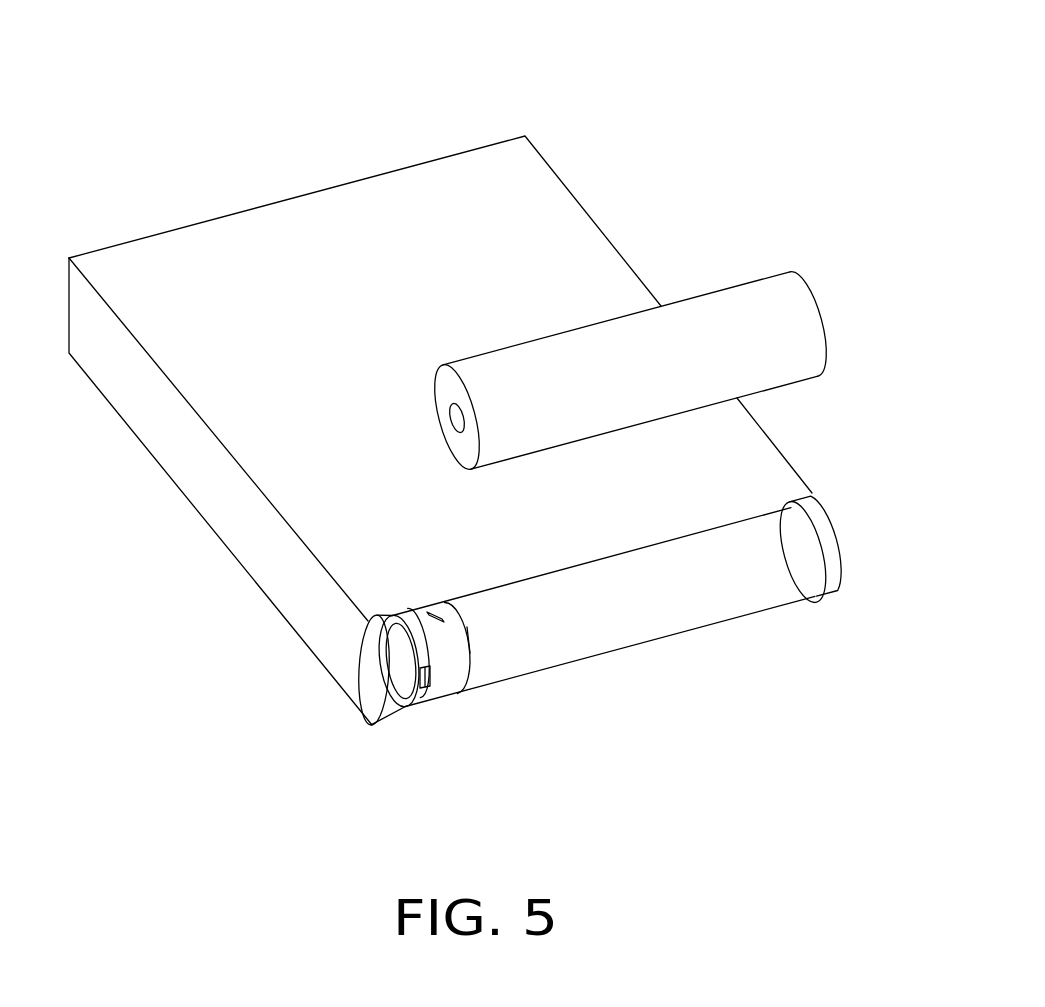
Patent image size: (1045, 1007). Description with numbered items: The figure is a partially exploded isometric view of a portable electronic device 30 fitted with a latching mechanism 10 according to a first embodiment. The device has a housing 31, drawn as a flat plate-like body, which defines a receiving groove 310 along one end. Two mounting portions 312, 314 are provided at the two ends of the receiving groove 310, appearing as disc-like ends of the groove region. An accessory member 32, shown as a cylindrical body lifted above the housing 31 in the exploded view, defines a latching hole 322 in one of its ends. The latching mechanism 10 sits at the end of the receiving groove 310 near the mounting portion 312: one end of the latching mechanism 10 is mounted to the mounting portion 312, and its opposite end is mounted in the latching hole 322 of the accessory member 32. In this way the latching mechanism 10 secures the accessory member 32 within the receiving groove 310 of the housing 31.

The portable electronic device 30 is at (485, 43).
The housing 31 is at (538, 243).
The accessory member 32 is at (563, 326).
The latching hole 322 is at (451, 421).
The receiving groove 310 is at (645, 641).
The mounting portion 312 is at (395, 698).
The mounting portion 314 is at (823, 528).
The latching mechanism 10 is at (452, 690).